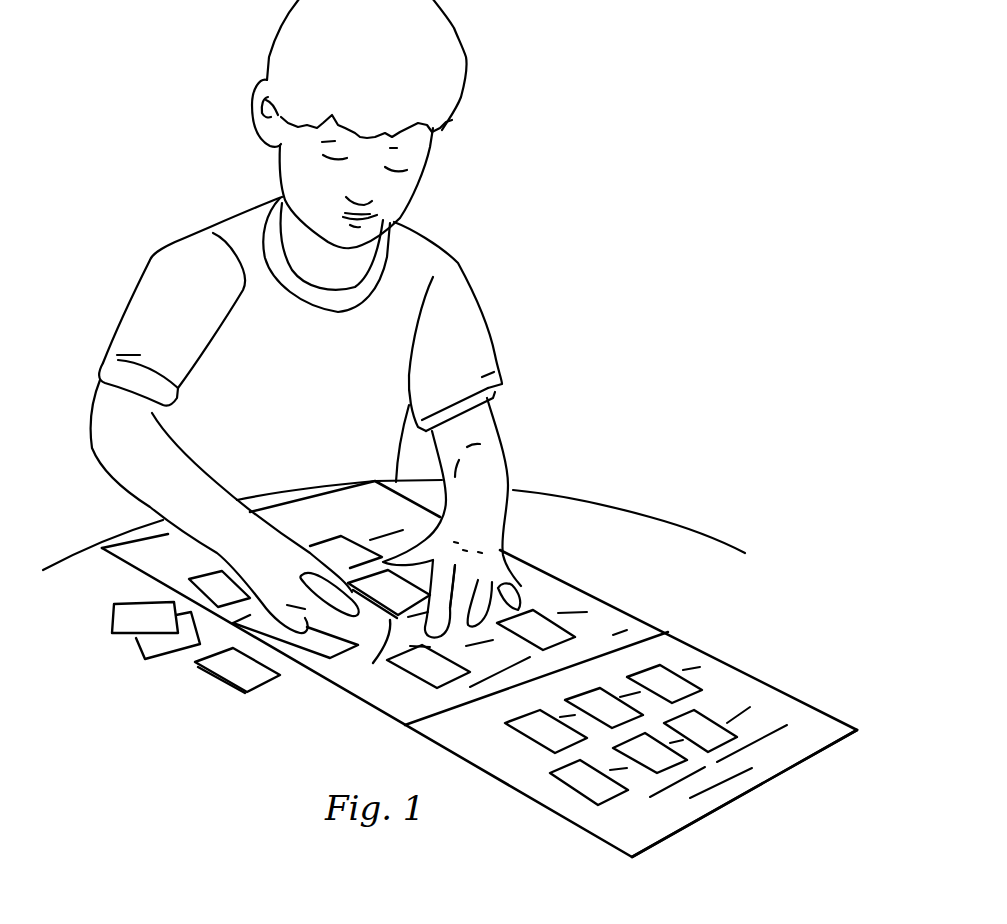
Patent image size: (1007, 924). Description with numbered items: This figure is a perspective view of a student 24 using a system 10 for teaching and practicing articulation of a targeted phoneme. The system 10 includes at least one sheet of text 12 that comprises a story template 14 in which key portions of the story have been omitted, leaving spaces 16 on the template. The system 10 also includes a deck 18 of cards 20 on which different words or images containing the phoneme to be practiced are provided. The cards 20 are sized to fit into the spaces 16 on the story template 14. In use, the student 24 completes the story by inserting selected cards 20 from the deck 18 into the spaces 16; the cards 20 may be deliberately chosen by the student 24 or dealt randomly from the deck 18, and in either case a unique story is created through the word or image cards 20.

The system for teaching and practicing articulation of a targeted phoneme 10 is at (612, 582).
The sheet of text 12 is at (668, 633).
The story template 14 is at (687, 798).
The spaces 16 is at (710, 717).
The deck 18 is at (227, 684).
The cards 20 is at (137, 640).
The student 24 is at (493, 338).